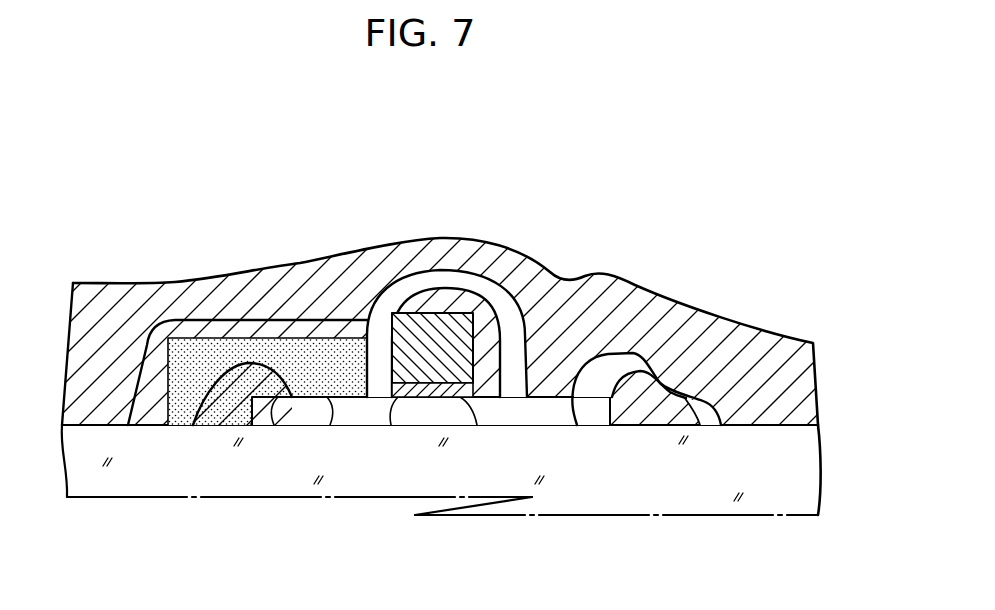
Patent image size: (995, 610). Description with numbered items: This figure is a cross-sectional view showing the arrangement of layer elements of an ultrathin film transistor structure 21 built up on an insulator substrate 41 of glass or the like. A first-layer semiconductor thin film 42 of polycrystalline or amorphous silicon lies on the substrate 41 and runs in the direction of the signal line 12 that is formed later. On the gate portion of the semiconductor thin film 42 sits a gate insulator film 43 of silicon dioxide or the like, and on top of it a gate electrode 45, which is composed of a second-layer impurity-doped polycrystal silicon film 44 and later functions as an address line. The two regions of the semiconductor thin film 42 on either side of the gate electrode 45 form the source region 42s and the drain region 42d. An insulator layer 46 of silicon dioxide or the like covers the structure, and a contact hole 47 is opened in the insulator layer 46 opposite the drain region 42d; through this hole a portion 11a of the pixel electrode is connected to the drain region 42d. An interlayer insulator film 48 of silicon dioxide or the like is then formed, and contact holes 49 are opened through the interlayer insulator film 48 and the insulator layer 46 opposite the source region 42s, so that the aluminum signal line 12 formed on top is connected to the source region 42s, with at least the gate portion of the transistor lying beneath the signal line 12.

The thin film transistor 21 is at (577, 208).
The portion of pixel electrode 11a is at (198, 357).
The signal line 12 is at (318, 272).
The insulator substrate 41 is at (707, 490).
The semiconductor thin film 42 is at (597, 415).
The drain region 42d is at (303, 417).
The source region 42s is at (563, 415).
The gate insulator film 43 is at (403, 417).
The impurity-doped polycrystal silicon film 44 is at (456, 280).
The gate electrode 45 is at (435, 320).
The insulator layer 46 is at (398, 302).
The contact hole 47 is at (300, 415).
The interlayer insulator film 48 is at (660, 373).
The contact holes 49 is at (558, 397).